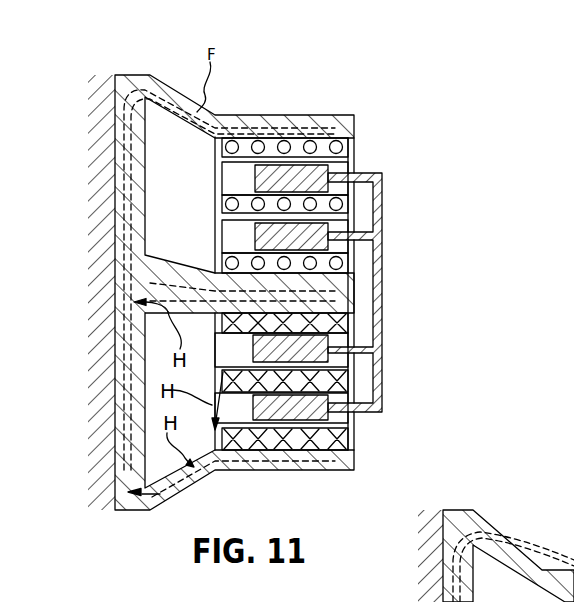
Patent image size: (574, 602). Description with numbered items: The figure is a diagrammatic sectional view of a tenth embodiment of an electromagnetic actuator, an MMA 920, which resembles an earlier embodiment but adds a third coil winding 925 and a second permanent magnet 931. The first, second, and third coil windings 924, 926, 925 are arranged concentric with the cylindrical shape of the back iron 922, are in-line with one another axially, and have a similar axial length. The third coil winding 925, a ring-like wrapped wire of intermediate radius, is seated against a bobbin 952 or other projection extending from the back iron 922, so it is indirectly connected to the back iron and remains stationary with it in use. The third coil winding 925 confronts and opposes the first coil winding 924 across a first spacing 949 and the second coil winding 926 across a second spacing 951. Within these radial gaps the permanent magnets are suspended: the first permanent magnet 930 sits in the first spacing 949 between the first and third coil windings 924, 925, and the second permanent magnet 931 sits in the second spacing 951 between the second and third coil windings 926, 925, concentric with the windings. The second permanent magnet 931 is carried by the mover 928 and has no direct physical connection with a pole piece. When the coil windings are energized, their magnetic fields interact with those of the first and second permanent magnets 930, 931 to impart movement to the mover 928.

The MMA 920 is at (177, 58).
The back iron 922 is at (293, 102).
The first coil winding 924 is at (358, 146).
The third coil winding 925 is at (359, 201).
The second coil winding 926 is at (360, 262).
The mover 928 is at (396, 380).
The first permanent magnet 930 is at (350, 167).
The second permanent magnet 931 is at (356, 225).
The first spacing 949 is at (238, 176).
The second spacing 951 is at (238, 236).
The bobbin 952 is at (247, 187).